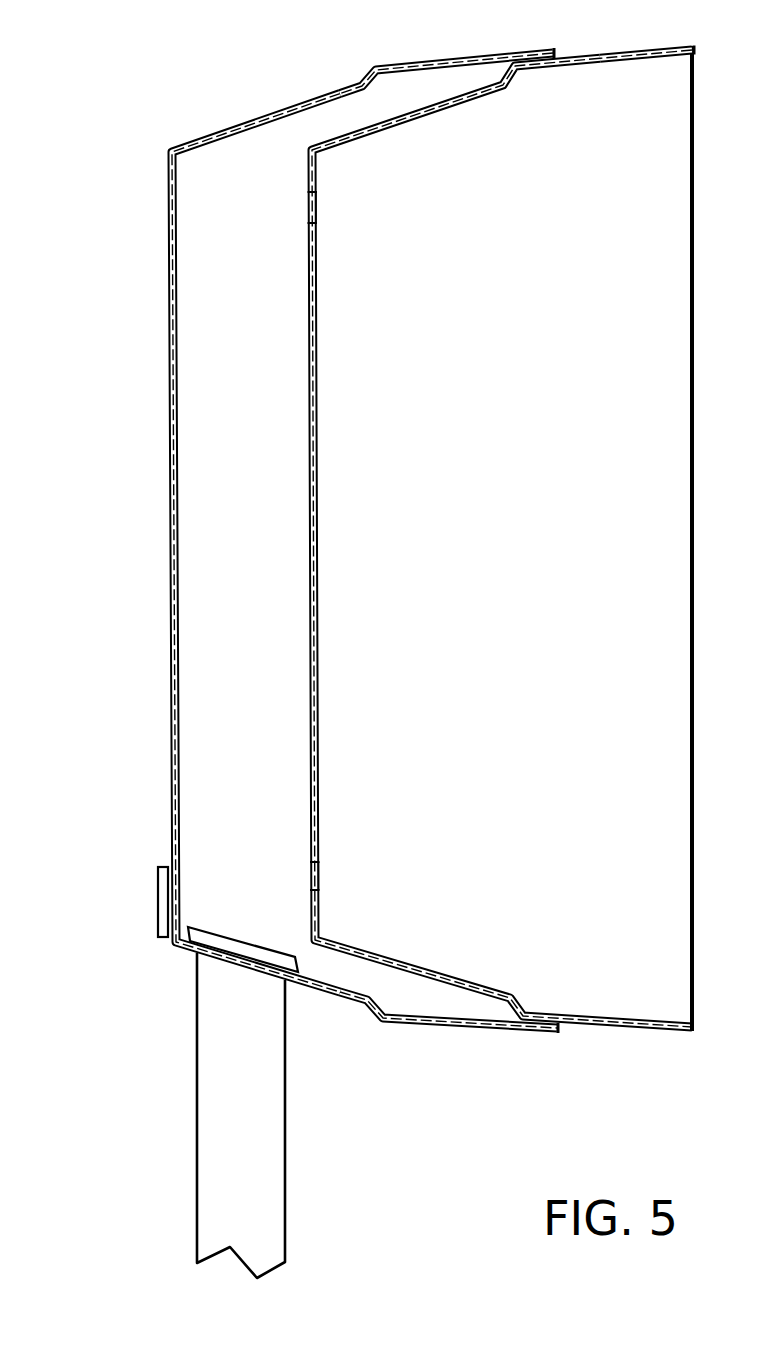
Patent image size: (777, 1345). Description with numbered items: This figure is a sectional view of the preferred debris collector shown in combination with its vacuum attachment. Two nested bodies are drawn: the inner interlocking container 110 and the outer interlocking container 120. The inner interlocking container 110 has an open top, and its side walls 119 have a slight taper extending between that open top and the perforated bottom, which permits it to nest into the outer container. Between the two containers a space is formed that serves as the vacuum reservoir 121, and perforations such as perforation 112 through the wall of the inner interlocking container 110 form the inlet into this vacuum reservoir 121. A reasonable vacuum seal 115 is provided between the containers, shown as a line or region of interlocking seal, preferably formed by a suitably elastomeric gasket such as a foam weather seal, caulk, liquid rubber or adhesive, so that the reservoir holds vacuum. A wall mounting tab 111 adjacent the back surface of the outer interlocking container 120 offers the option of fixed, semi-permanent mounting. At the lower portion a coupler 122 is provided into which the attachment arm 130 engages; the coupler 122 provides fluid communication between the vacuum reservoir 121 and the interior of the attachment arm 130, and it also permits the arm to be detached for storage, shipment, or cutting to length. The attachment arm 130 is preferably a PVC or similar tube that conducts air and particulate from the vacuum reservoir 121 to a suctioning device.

The interlocking container 110 is at (527, 516).
The wall mounting tab 111 is at (121, 902).
The perforation 112 is at (317, 201).
The vacuum seal 115 is at (522, 62).
The side wall 119 is at (608, 55).
The interlocking container 120 is at (205, 543).
The vacuum reservoir 121 is at (275, 426).
The coupler 122 is at (240, 948).
The attachment arm 130 is at (262, 1117).